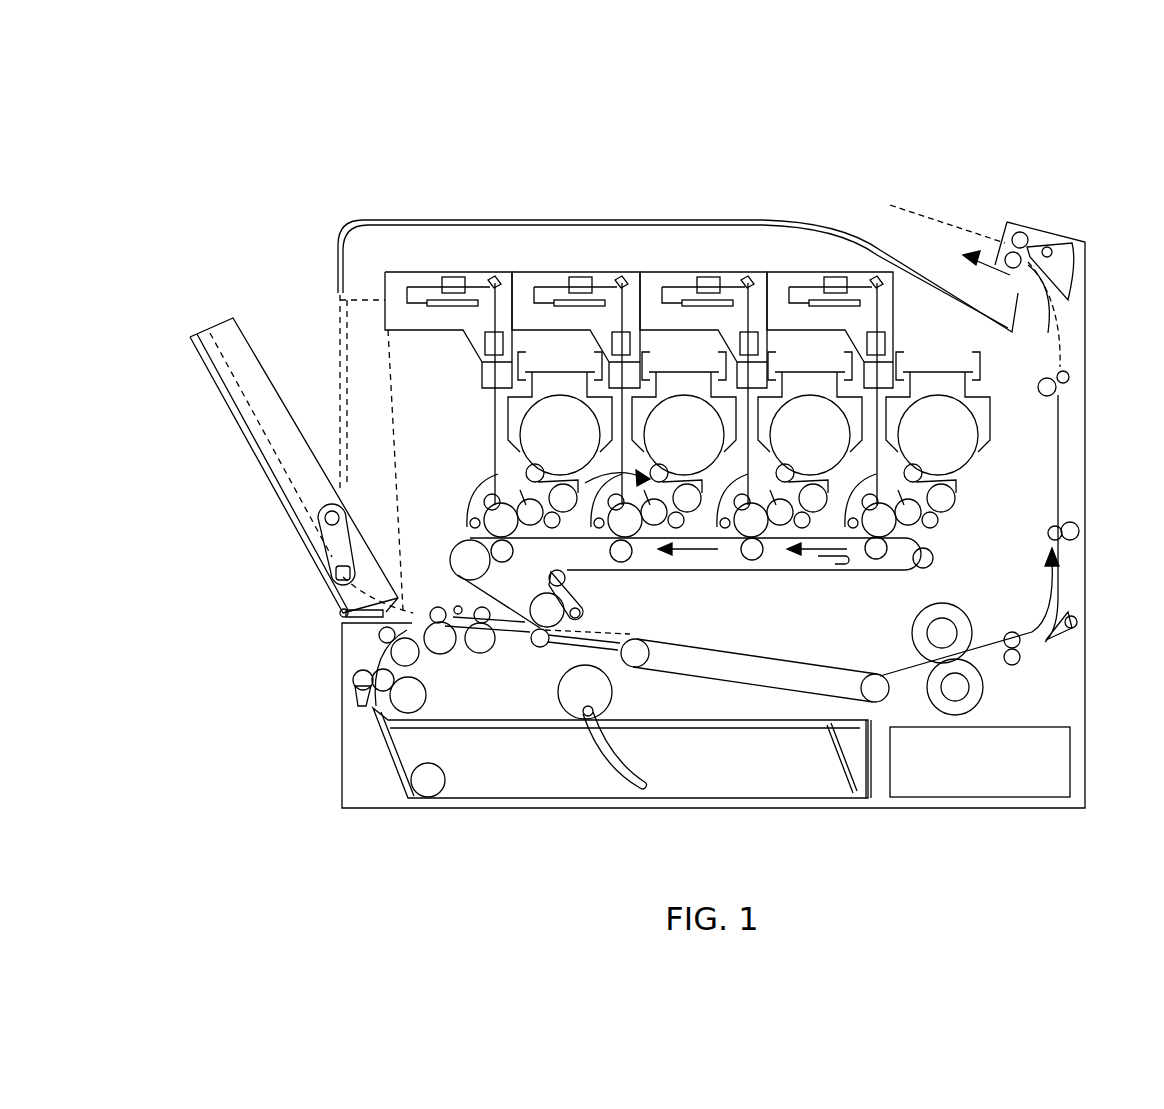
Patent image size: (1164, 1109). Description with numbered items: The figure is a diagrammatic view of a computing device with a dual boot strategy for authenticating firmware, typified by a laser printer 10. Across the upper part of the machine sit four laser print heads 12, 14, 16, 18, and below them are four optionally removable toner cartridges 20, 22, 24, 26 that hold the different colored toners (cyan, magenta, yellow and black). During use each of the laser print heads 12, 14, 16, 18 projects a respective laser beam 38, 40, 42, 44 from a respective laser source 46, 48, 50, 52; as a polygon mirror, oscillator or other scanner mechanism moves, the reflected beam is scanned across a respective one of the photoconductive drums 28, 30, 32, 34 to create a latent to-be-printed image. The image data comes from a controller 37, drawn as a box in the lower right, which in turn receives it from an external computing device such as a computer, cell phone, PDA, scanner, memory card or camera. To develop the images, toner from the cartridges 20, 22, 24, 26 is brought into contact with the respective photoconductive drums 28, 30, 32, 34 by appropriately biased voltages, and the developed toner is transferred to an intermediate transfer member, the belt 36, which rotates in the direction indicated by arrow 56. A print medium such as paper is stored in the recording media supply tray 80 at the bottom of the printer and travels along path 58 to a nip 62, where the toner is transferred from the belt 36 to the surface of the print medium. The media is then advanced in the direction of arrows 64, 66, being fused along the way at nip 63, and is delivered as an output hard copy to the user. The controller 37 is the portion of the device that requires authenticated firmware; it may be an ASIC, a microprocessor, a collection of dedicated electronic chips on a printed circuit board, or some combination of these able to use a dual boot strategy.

The laser printer 10 is at (962, 168).
The laser print head 12 is at (413, 270).
The laser print head 14 is at (540, 270).
The laser print head 16 is at (653, 270).
The laser print head 18 is at (780, 270).
The toner cartridge 20 is at (546, 470).
The toner cartridge 22 is at (670, 470).
The toner cartridge 24 is at (796, 470).
The toner cartridge 26 is at (924, 470).
The photoconductive drum 28 is at (470, 505).
The photoconductive drum 30 is at (638, 537).
The photoconductive drum 32 is at (760, 537).
The photoconductive drum 34 is at (890, 527).
The belt 36 is at (817, 572).
The controller 37 is at (1070, 745).
The laser beam 38 is at (495, 422).
The laser beam 40 is at (575, 278).
The laser beam 42 is at (700, 278).
The laser beam 44 is at (878, 306).
The laser source 46 is at (475, 300).
The laser source 48 is at (603, 300).
The laser source 50 is at (731, 300).
The laser source 52 is at (858, 296).
The arrow 56 is at (843, 565).
The path 58 is at (515, 646).
The nip 62 is at (590, 623).
The nip 63 is at (922, 660).
The arrow 64 is at (1035, 620).
The arrow 66 is at (997, 245).
The recording media supply tray 80 is at (378, 768).